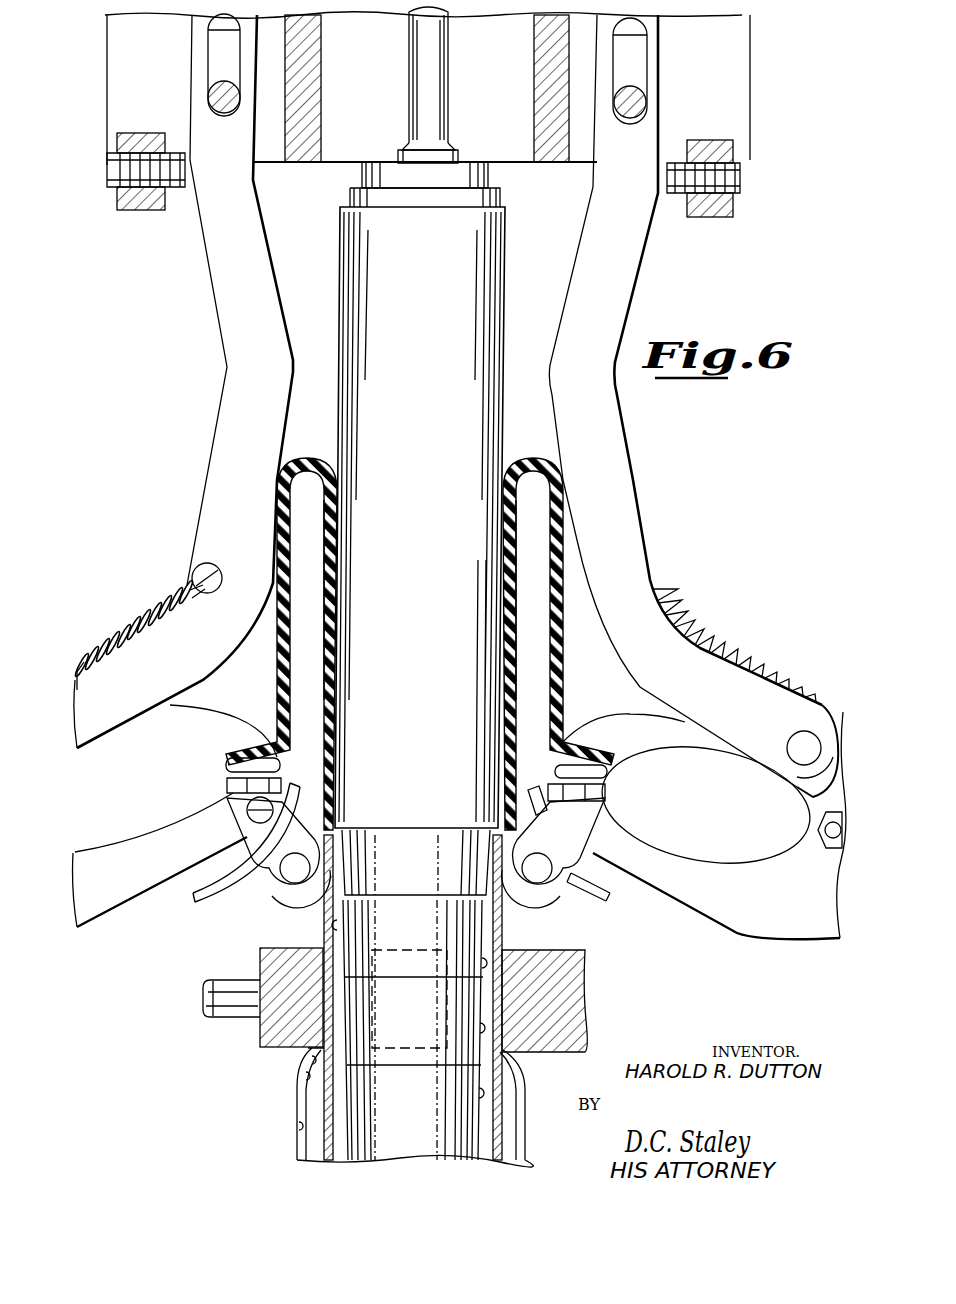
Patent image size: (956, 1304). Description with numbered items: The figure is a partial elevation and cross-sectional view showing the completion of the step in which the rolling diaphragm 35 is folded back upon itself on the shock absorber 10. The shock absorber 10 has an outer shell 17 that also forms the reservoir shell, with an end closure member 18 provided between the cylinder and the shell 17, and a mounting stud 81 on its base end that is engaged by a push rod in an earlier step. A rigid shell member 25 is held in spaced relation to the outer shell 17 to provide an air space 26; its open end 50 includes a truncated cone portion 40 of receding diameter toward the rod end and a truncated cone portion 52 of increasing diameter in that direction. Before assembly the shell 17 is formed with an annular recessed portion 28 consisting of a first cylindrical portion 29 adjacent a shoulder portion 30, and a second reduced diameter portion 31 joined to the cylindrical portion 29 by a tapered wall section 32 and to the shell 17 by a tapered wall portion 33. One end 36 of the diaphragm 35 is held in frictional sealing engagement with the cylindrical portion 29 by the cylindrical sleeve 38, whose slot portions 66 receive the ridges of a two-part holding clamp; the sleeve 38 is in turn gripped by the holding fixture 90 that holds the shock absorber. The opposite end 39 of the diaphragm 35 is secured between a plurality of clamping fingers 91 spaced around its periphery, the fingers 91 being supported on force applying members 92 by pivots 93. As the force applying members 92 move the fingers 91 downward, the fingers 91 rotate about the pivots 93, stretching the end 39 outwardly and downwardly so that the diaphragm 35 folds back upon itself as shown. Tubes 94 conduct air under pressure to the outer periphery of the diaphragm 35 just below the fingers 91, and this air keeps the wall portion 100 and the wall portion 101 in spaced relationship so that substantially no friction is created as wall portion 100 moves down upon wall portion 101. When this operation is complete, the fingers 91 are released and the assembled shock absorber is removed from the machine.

The shock absorber 10 is at (512, 232).
The outer shell 17 is at (458, 352).
The end closure member 18 is at (484, 203).
The rigid shell member 25 is at (298, 1108).
The air space 26 is at (306, 1095).
The annular recessed portion 28 is at (484, 1005).
The first cylindrical portion 29 is at (416, 876).
The shoulder portion 30 is at (343, 821).
The second reduced diameter portion 31 is at (483, 1028).
The tapered wall section 32 is at (483, 961).
The tapered wall portion 33 is at (483, 1093).
The rolling diaphragm 35 is at (506, 708).
The one end of the rolling diaphragm 36 is at (336, 924).
The cylindrical sleeve 38 is at (323, 932).
The opposite end of the rolling diaphragm 39 is at (607, 767).
The truncated cone portion 40 is at (298, 1124).
The open end of the shell member 50 is at (312, 1059).
The truncated cone portion 52 is at (303, 1076).
The slot portions 66 is at (327, 895).
The mounting stud 81 is at (427, 97).
The holding fixture 90 is at (584, 970).
The clamping fingers 91 is at (688, 738).
The force applying members 92 is at (214, 479).
The pivots 93 is at (797, 743).
The tubes 94 is at (276, 969).
The wall portion 100 is at (285, 668).
The wall portion 101 is at (333, 638).